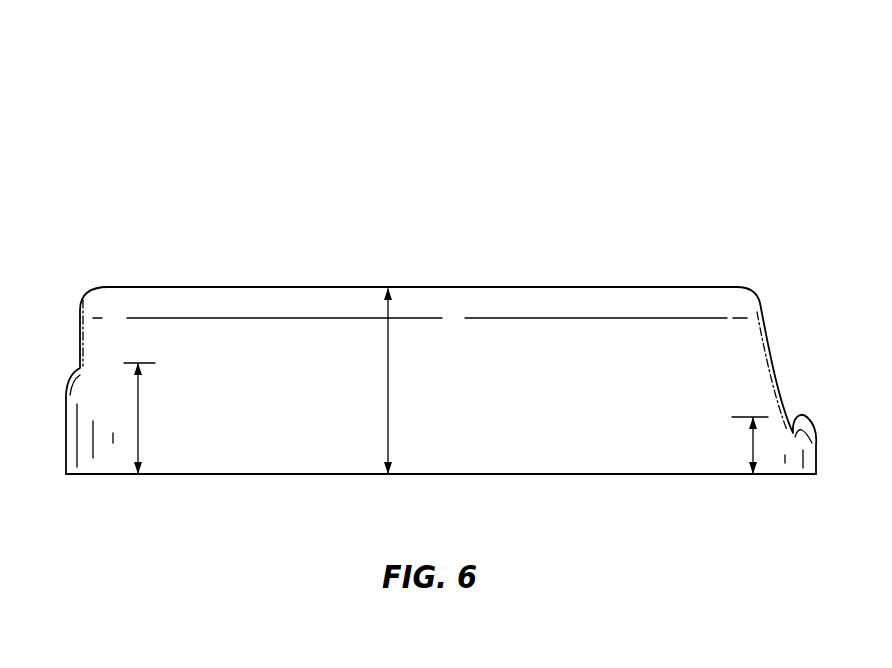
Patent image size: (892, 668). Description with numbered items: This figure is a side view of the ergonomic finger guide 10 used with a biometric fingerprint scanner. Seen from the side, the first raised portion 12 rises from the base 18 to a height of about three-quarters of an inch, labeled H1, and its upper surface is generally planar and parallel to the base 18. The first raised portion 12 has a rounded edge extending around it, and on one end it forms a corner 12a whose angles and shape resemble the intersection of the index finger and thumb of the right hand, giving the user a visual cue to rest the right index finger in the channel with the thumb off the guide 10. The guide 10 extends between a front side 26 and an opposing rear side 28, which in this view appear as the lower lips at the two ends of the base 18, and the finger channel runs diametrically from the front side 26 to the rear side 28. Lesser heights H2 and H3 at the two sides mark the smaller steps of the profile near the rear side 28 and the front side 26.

The finger guide 10 is at (204, 99).
The first raised portion 12 is at (463, 286).
The corner 12a is at (765, 306).
The base 18 is at (570, 475).
The front side 26 is at (816, 462).
The rear side 28 is at (66, 445).